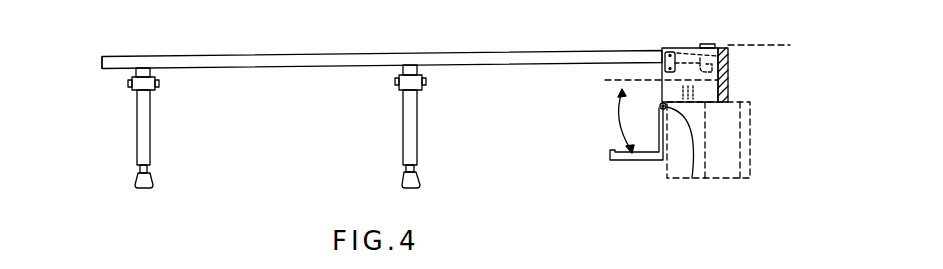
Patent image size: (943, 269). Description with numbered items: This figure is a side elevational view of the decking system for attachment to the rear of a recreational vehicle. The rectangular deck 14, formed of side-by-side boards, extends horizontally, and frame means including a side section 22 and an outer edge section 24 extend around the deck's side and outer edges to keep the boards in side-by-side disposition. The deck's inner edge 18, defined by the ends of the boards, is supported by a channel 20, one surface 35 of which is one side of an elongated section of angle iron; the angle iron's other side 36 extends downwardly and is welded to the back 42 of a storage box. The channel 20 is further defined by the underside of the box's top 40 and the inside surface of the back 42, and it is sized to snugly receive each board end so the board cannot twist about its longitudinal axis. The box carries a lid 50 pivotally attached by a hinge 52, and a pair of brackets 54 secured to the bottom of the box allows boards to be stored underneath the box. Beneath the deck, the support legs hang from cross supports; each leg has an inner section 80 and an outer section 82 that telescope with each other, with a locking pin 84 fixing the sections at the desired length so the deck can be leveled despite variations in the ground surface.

The deck 14 is at (350, 52).
The inner edge 18 is at (724, 45).
The channel 20 is at (612, 80).
The side section 22 is at (288, 64).
The outer edge section 24 is at (102, 60).
The surface 35 is at (665, 50).
The other side of angle iron 36 is at (730, 80).
The top 40 is at (708, 44).
The back 42 is at (712, 62).
The lid 50 is at (648, 160).
The hinge 52 is at (691, 178).
The bracket 54 is at (752, 132).
The inner section 80 is at (418, 171).
The outer section 82 is at (403, 135).
The locking pin 84 is at (416, 156).